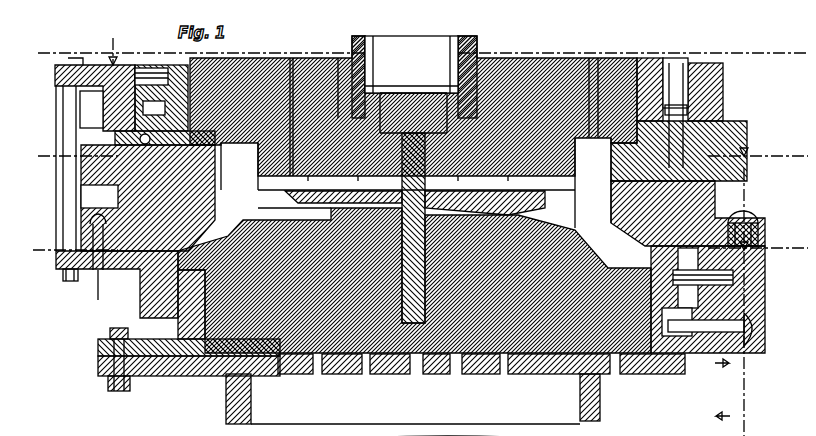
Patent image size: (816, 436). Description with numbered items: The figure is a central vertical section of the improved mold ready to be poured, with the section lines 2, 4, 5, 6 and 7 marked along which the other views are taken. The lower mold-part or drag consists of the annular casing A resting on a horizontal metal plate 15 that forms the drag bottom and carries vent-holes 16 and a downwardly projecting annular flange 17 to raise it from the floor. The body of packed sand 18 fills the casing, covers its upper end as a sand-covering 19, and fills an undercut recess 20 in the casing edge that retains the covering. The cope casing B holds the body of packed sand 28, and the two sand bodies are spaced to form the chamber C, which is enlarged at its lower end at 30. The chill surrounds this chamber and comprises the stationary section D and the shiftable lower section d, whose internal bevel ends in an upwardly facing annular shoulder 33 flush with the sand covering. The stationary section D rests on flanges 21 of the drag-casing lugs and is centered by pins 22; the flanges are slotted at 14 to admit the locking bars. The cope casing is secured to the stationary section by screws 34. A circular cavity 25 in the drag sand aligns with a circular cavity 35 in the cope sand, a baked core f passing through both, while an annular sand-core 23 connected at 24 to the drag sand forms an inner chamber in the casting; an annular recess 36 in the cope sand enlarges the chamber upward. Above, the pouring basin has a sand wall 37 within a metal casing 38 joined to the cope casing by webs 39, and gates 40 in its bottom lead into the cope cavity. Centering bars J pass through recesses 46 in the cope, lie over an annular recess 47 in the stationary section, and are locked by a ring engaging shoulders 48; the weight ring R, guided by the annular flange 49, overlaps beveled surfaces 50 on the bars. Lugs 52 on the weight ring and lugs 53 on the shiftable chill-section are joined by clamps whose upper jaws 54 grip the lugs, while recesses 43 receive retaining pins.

The section line 2 is at (410, 52).
The section line 4 is at (417, 308).
The section line 5 is at (414, 265).
The section line 6 is at (93, 178).
The section line 7 is at (125, 100).
The slot 14 is at (742, 335).
The metal plate 15 is at (450, 366).
The vent-holes 16 is at (300, 366).
The annular flange 17 is at (592, 400).
The body of packed sand 18 is at (390, 366).
The sand-covering 19 is at (422, 208).
The recess 20 is at (205, 325).
The flanges 21 is at (688, 213).
The pins 22 is at (742, 209).
The annular sand-core 23 is at (398, 166).
The connection points 24 is at (399, 197).
The circular cavity 25 is at (412, 366).
The body of packed sand 28 is at (570, 50).
The diametrical enlargement 30 is at (132, 300).
The annular shoulder 33 is at (148, 198).
The screws 34 is at (690, 58).
The circular cavity 35 is at (573, 183).
The annular recess 36 is at (212, 130).
The surrounding wall 37 is at (458, 30).
The metal casing 38 is at (344, 40).
The webs 39 is at (282, 50).
The gates 40 is at (411, 64).
The recesses 43 is at (403, 182).
The recesses 46 is at (161, 98).
The annular recess 47 is at (56, 215).
The shoulders 48 is at (130, 140).
The annular flange 49 is at (770, 95).
The beveled surfaces 50 is at (130, 125).
The lugs 52 is at (47, 82).
The lugs 53 is at (62, 273).
The upper jaws 54 is at (60, 55).